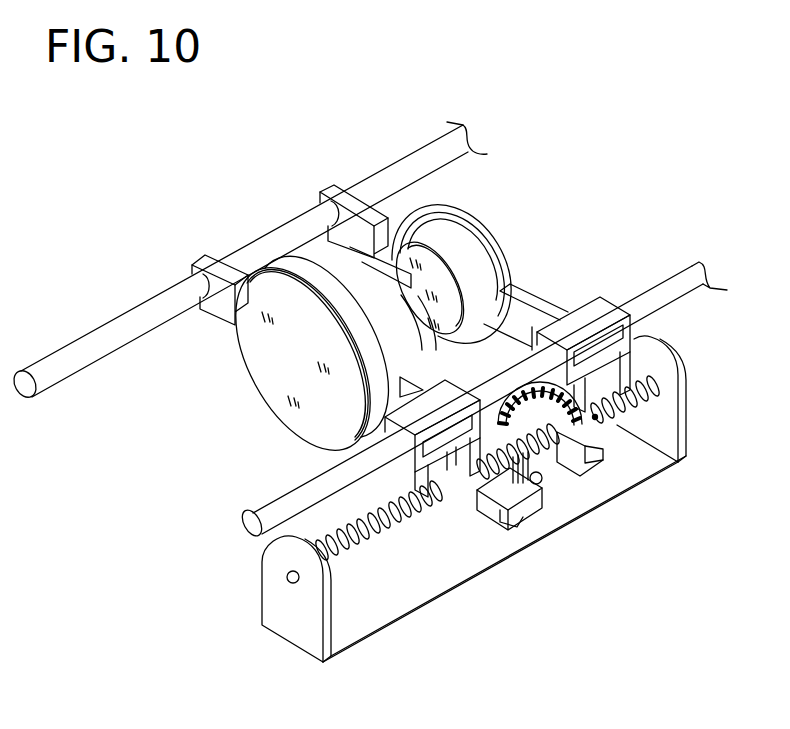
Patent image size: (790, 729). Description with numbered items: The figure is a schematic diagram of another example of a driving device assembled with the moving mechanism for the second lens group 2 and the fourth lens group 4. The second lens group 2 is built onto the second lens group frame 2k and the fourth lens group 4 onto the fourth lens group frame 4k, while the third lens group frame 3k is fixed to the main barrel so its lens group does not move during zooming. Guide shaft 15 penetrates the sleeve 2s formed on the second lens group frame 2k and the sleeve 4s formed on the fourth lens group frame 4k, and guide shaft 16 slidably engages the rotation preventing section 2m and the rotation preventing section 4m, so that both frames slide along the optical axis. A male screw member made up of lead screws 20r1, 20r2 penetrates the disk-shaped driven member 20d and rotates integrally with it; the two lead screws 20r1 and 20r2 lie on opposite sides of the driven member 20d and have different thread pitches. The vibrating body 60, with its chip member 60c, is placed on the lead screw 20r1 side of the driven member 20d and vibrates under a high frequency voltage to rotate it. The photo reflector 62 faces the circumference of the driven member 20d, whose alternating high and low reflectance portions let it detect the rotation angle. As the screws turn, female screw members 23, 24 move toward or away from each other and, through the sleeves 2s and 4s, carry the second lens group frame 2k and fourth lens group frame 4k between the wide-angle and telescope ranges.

The second lens group 2 is at (263, 358).
The second lens group frame 2k is at (292, 250).
The rotation preventing section 2m is at (203, 260).
The sleeve 2s is at (310, 427).
The third lens group frame 3k is at (437, 352).
The fourth lens group 4 is at (430, 270).
The fourth lens group frame 4k is at (490, 250).
The rotation preventing section 4m is at (332, 187).
The sleeve 4s is at (592, 308).
The guide shaft 15 is at (280, 512).
The guide shaft 16 is at (133, 320).
The driven member 20d is at (527, 415).
The lead screw 20r1 is at (373, 545).
The lead screw 20r2 is at (687, 407).
The female screw member 23 is at (458, 495).
The female screw member 24 is at (603, 422).
The vibrating body 60 is at (548, 522).
The chip member 60c is at (557, 490).
The photo reflector 62 is at (560, 480).